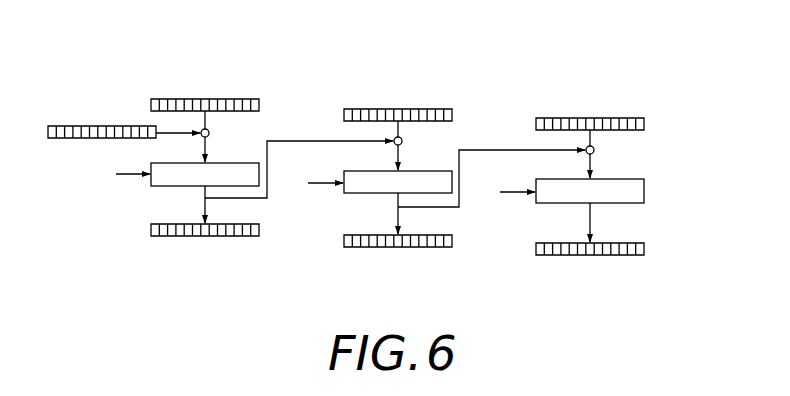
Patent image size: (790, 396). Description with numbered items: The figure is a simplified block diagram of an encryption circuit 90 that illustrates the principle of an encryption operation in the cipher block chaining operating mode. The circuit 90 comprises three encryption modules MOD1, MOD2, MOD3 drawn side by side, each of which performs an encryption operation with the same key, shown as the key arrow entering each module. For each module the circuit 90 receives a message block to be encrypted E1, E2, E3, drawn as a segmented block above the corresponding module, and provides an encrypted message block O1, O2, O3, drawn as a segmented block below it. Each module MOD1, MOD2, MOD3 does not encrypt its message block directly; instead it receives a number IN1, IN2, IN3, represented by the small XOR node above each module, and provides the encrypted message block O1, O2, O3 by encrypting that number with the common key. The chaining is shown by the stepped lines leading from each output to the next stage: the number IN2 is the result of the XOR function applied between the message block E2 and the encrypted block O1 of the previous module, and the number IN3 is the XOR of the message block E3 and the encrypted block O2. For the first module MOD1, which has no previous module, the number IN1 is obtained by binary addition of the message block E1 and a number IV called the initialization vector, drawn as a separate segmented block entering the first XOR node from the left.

The encryption circuit 90 is at (570, 38).
The initialization vector IV is at (62, 126).
The message block to be encrypted E1 is at (255, 99).
The message block to be encrypted E2 is at (448, 109).
The message block to be encrypted E3 is at (640, 118).
The number IN1 is at (208, 137).
The number IN2 is at (401, 145).
The number IN3 is at (593, 154).
The encryption module MOD1 is at (185, 186).
The encryption module MOD2 is at (378, 193).
The encryption module MOD3 is at (572, 203).
The encrypted message block O1 is at (220, 237).
The encrypted message block O2 is at (415, 247).
The encrypted message block O3 is at (607, 256).